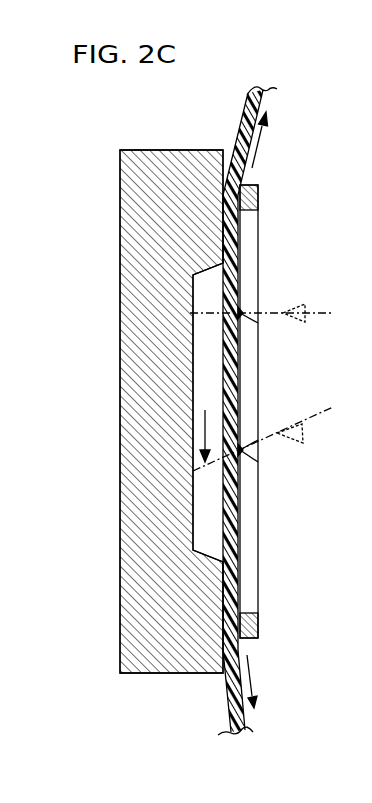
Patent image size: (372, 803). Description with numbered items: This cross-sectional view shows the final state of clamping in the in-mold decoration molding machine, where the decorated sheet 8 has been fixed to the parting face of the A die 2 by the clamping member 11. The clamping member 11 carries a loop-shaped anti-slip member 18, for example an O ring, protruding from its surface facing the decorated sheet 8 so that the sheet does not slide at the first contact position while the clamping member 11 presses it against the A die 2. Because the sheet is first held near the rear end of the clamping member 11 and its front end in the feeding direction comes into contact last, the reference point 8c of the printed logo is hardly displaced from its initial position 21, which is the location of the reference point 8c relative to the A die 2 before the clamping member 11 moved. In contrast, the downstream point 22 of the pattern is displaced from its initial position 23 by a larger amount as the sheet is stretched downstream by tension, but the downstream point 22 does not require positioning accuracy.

The A die 2 is at (150, 157).
The decorated sheet 8 is at (242, 118).
The reference point 8c is at (240, 313).
The clamping member 11 is at (263, 588).
The loop-shaped anti-slip member 18 is at (258, 199).
The initial position 21 is at (305, 310).
The downstream point 22 is at (244, 450).
The initial position 23 is at (301, 436).